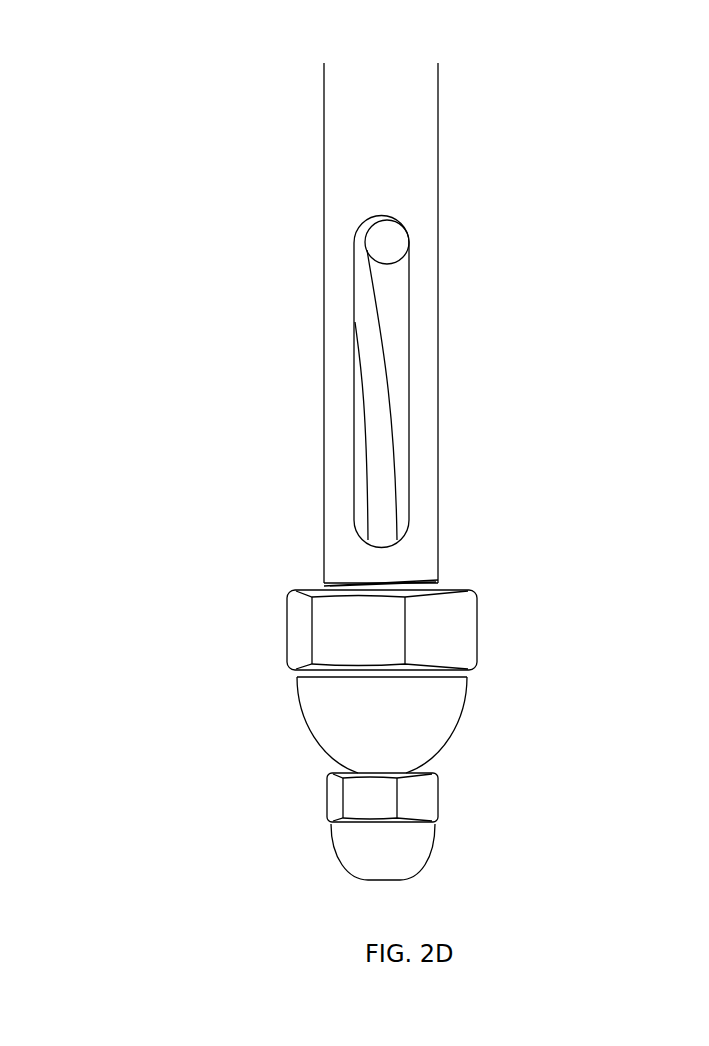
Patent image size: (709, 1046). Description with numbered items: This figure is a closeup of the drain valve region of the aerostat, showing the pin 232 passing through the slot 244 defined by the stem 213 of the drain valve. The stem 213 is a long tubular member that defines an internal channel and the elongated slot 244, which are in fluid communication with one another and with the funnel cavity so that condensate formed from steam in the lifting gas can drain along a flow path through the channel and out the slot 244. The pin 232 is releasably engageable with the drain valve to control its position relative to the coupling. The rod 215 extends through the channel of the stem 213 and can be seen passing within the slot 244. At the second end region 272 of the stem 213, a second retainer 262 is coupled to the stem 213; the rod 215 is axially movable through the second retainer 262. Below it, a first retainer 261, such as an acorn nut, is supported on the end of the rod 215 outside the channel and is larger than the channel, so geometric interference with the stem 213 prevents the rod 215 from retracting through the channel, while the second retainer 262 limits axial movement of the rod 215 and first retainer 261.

The stem 213 is at (445, 127).
The rod 215 is at (387, 462).
The pin 232 is at (380, 248).
The slot 244 is at (387, 303).
The second end region 272 is at (324, 522).
The second retainer 262 is at (463, 634).
The first retainer 261 is at (438, 800).